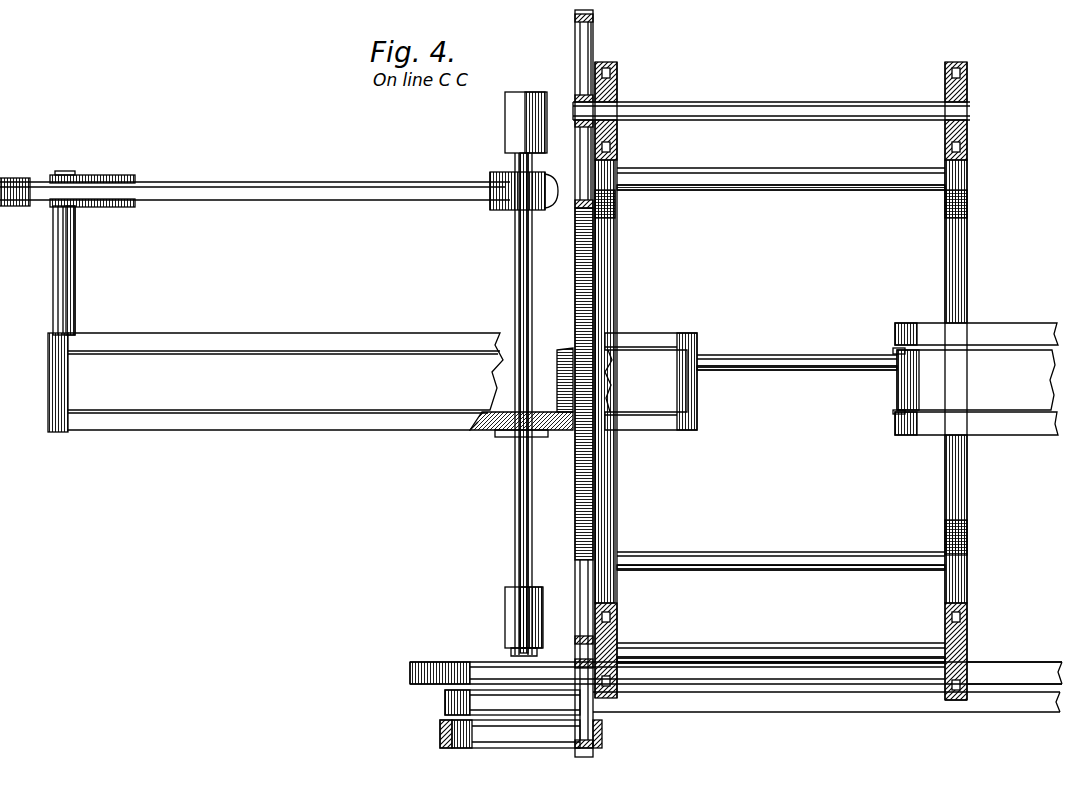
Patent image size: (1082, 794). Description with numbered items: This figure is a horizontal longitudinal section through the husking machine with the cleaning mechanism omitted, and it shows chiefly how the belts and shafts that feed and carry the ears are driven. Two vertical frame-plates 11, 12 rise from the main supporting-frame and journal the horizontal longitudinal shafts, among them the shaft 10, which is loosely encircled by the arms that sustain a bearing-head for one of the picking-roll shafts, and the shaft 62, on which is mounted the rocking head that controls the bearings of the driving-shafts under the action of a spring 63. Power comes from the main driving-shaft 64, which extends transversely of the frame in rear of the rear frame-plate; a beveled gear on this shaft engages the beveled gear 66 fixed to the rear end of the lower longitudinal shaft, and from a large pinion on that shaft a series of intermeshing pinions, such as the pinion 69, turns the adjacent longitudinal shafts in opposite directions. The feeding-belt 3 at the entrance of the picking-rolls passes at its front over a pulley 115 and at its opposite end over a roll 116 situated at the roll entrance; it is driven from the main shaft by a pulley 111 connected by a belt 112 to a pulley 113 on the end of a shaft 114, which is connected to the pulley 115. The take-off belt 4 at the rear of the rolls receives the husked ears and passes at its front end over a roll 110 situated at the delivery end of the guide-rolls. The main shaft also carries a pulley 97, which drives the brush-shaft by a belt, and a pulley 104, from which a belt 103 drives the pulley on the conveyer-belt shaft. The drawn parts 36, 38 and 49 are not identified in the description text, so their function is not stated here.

The feeding-belt 3 is at (285, 381).
The take-off belt 4 is at (976, 379).
The horizontal longitudinal shaft 10 is at (673, 180).
The vertical frame-plate 11 is at (612, 606).
The vertical frame-plate 12 is at (962, 592).
The rod 36 is at (990, 668).
The connecting rod 38 is at (820, 349).
The cross rod 49 is at (727, 560).
The horizontal longitudinal shaft 62 is at (722, 650).
The spring 63 is at (494, 432).
The main driving-shaft 64 is at (534, 503).
The beveled gear 66 is at (569, 350).
The pinion 69 is at (575, 72).
The pulley 97 is at (736, 661).
The belt 103 is at (793, 712).
The pulley 104 is at (450, 697).
The roll 110 is at (893, 351).
The pulley 111 is at (501, 210).
The belt 112 is at (317, 185).
The pulley 113 is at (118, 178).
The shaft 114 is at (76, 290).
The pulley 115 is at (48, 356).
The roll 116 is at (689, 345).